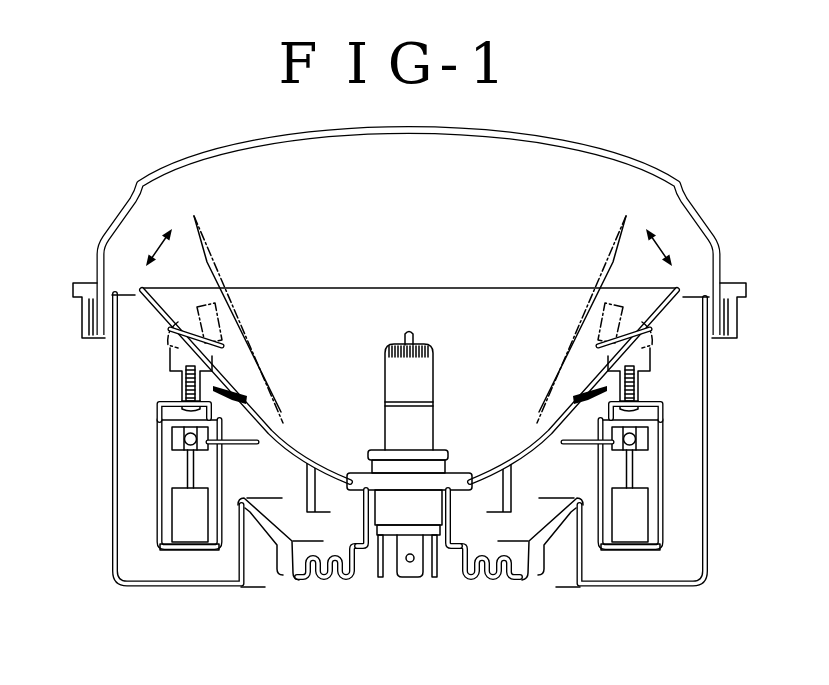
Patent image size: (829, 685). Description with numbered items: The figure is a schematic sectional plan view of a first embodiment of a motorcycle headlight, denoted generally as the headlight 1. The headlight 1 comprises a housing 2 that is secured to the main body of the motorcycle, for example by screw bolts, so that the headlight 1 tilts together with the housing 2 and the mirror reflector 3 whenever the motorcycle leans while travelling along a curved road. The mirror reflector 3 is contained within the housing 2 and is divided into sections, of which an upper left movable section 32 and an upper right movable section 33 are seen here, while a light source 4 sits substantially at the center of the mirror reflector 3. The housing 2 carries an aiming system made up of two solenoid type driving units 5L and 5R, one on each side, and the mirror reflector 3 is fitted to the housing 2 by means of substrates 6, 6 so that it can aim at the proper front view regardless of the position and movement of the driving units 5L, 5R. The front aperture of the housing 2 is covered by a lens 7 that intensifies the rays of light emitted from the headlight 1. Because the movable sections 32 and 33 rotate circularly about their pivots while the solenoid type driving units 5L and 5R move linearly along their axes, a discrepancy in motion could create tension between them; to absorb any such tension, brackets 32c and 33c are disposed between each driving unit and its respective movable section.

The headlight 1 is at (648, 122).
The housing 2 is at (708, 474).
The mirror reflector 3 is at (479, 486).
The light source 4 is at (393, 367).
The solenoid type driving unit 5L is at (178, 512).
The solenoid type driving unit 5R is at (633, 520).
The substrate 6 is at (200, 553).
The lens 7 is at (258, 137).
The upper left movable section 32 is at (284, 442).
The upper right movable section 33 is at (558, 432).
The bracket 32c is at (158, 419).
The bracket 33c is at (664, 413).